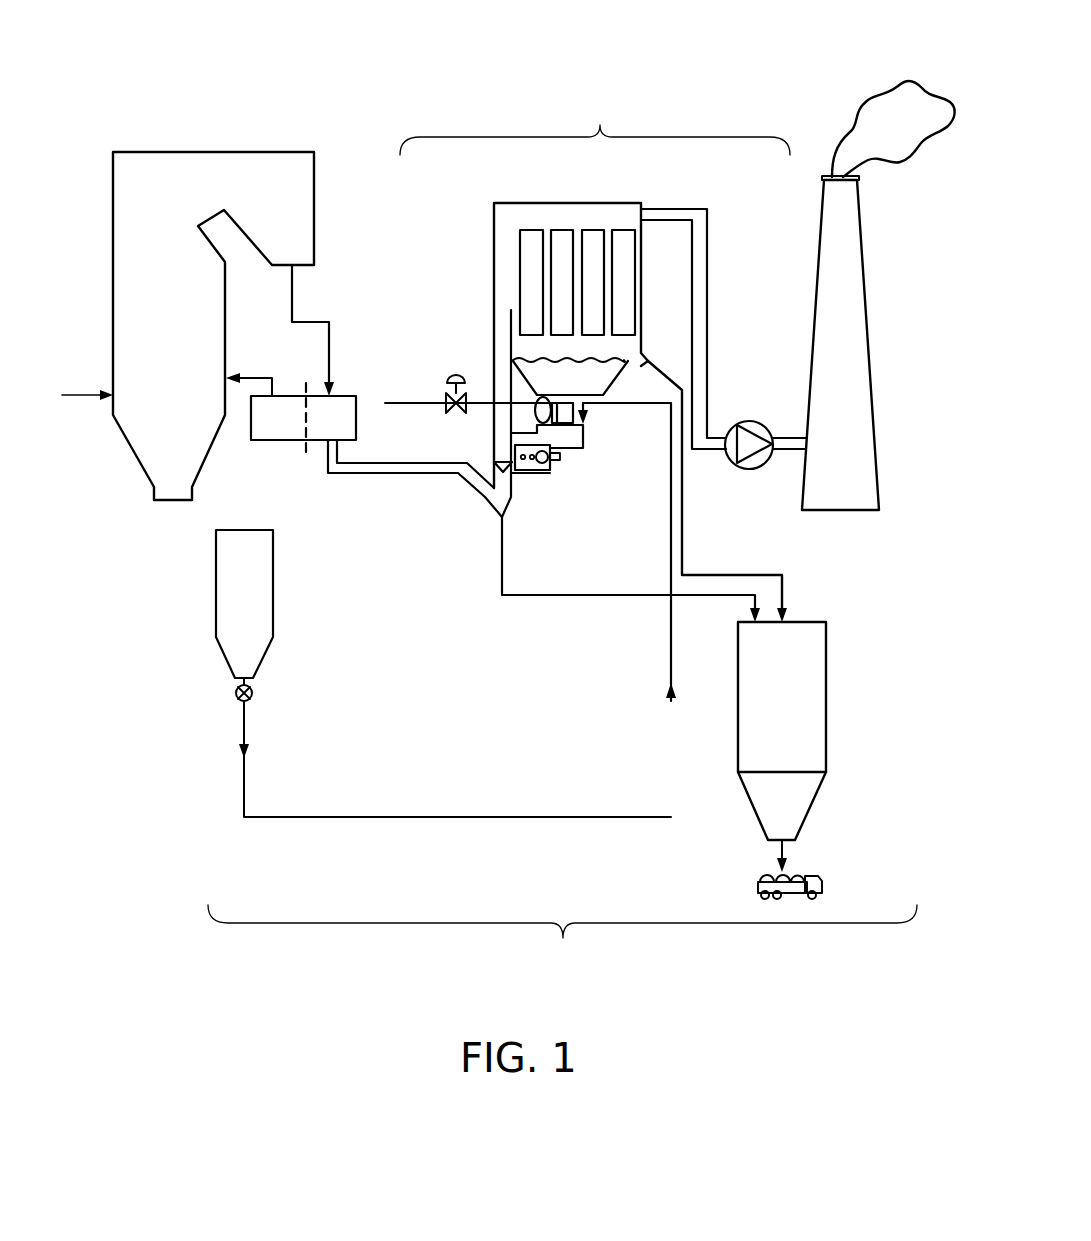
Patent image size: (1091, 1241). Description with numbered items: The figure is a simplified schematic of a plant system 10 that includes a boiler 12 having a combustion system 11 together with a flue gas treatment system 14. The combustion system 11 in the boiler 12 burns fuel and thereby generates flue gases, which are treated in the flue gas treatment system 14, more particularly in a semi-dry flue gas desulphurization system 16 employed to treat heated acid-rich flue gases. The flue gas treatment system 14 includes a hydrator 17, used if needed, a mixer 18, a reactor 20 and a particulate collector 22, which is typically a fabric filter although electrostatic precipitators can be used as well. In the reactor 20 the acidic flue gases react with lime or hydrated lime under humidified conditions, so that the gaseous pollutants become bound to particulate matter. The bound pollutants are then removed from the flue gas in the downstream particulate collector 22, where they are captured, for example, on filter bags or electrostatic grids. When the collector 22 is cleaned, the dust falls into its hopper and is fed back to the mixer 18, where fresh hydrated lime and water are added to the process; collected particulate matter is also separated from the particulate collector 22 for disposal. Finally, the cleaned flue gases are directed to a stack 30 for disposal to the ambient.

The plant system 10 is at (724, 50).
The combustion system 11 is at (100, 342).
The boiler 12 is at (160, 120).
The flue gas treatment system 14 is at (563, 938).
The semi-dry flue gas desulphurization system 16 is at (600, 125).
The hydrator 17 is at (580, 447).
The mixer 18 is at (538, 473).
The reactor 20 is at (475, 493).
The particulate collector 22 is at (494, 252).
The stack 30 is at (875, 419).